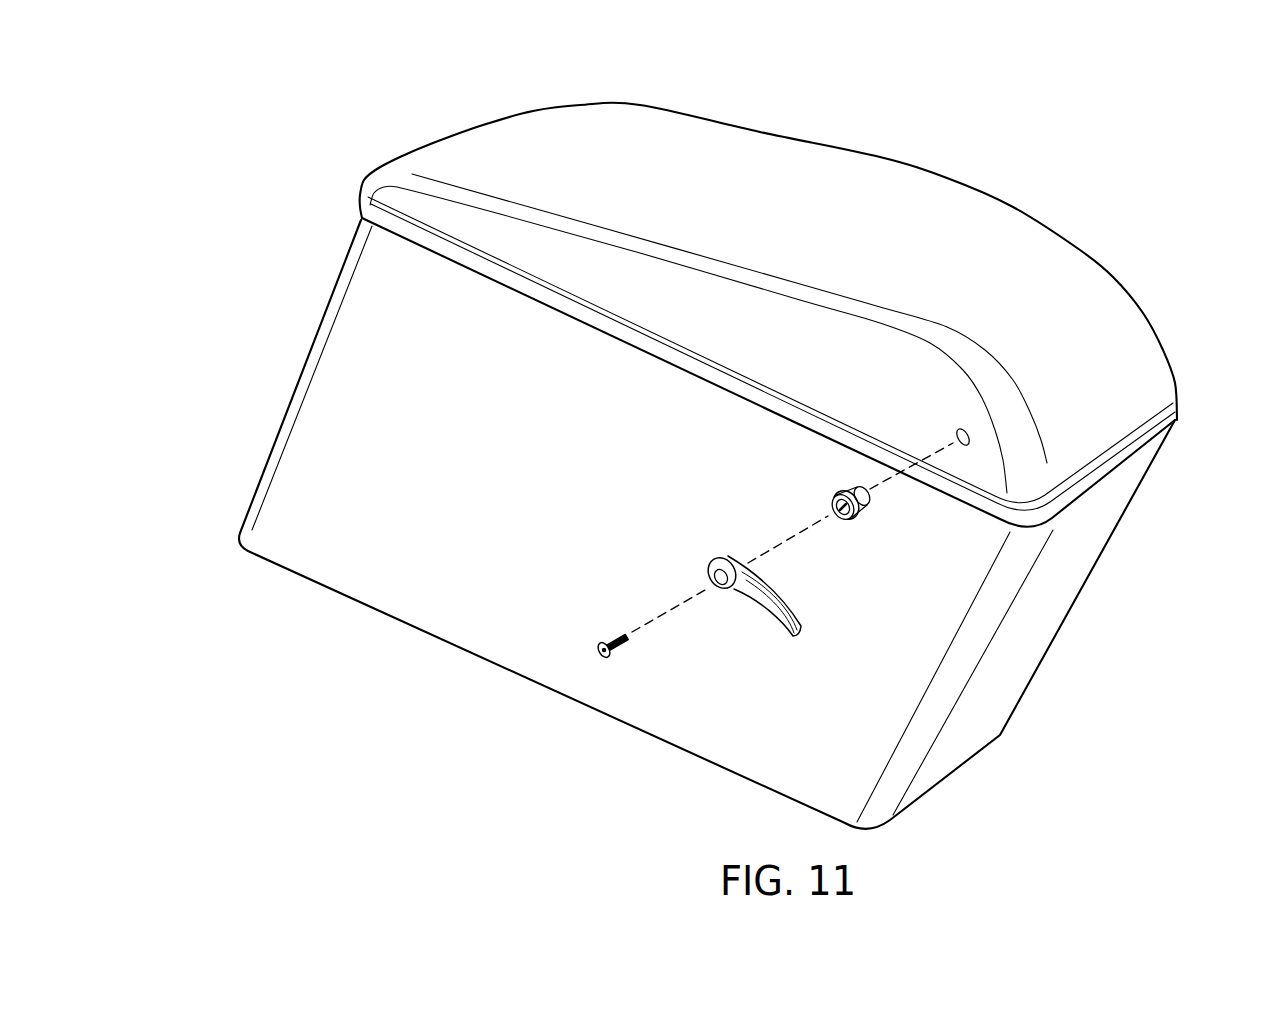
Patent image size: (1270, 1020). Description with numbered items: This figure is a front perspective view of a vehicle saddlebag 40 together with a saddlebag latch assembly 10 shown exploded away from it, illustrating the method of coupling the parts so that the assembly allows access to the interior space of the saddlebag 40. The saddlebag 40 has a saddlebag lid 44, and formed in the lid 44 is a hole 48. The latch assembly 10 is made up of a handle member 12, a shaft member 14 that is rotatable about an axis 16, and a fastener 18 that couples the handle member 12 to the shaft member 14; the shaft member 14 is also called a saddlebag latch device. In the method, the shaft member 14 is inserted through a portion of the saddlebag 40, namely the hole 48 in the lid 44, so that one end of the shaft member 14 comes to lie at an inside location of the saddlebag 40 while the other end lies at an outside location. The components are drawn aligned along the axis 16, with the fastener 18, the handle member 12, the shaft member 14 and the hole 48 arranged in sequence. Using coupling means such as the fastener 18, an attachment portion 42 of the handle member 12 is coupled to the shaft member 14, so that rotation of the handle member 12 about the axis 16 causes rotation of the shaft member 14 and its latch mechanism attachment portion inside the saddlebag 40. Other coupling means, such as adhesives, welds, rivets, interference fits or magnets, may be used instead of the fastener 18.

The saddlebag latch assembly 10 is at (665, 570).
The handle member 12 is at (816, 605).
The shaft member 14 is at (878, 522).
The axis 16 is at (787, 537).
The fastener 18 is at (625, 645).
The saddlebag 40 is at (1190, 446).
The attachment portion 42 is at (700, 548).
The saddlebag lid 44 is at (1165, 324).
The hole 48 is at (972, 437).